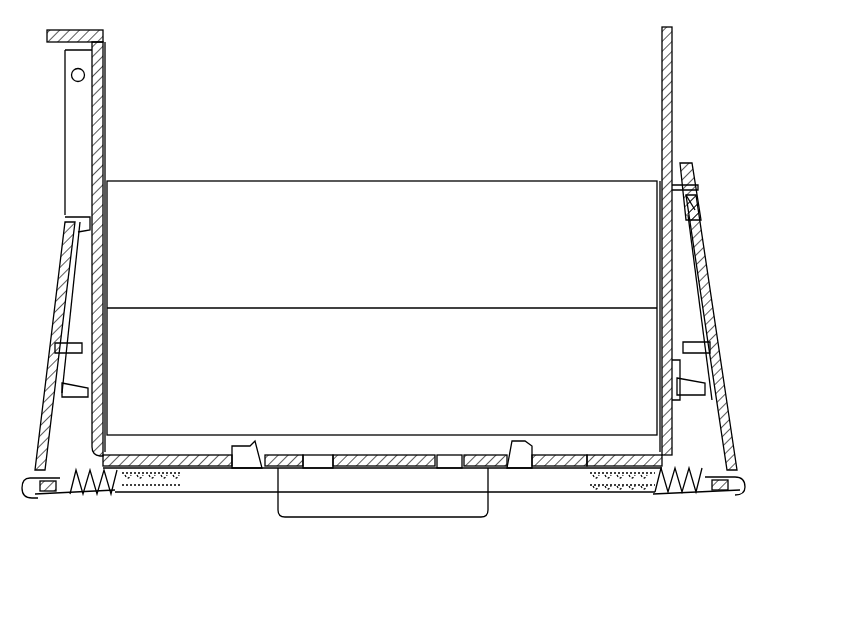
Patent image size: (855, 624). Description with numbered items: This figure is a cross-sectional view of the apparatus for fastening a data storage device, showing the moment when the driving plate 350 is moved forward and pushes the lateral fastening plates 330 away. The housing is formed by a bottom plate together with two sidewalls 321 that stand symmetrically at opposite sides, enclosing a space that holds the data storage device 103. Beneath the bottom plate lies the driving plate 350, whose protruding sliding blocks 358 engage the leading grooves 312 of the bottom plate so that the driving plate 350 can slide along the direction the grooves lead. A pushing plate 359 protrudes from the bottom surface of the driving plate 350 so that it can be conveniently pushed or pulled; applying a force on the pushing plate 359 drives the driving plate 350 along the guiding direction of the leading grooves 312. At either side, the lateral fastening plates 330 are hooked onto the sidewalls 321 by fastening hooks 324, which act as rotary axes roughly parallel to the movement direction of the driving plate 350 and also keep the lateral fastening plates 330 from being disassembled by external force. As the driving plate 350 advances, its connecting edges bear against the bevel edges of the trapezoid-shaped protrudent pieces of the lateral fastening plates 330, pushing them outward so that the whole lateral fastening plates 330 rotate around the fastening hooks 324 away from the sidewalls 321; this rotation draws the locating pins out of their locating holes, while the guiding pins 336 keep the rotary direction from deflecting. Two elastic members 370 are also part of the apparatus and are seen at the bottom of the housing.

The data storage device 103 is at (223, 340).
The leading grooves 312 is at (432, 455).
The sidewalls 321 is at (673, 86).
The fastening hook 324 is at (545, 387).
The lateral fastening plates 330 is at (726, 418).
The guiding pins 336 is at (683, 348).
The driving plate 350 is at (530, 490).
The sliding blocks 358 is at (452, 460).
The pushing plate 359 is at (448, 500).
The elastic members 370 is at (628, 490).